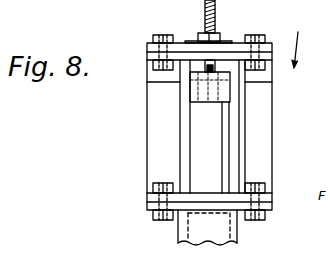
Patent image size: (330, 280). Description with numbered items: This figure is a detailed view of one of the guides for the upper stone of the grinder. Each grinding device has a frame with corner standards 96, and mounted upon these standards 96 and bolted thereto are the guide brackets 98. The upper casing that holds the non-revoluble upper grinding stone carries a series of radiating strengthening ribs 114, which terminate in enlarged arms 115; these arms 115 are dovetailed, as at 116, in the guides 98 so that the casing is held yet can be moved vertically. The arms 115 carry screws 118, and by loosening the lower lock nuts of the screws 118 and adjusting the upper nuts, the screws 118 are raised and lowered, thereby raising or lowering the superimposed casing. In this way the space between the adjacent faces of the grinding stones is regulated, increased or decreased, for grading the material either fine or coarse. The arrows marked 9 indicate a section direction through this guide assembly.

The section line 9- 9 is at (136, 83).
The standards 96 is at (238, 237).
The guide brackets 98 is at (229, 110).
The radiating strengthening ribs 114 is at (210, 104).
The enlarged arms 115 is at (196, 93).
The dovetail 116 is at (231, 92).
The screws 118 is at (216, 13).